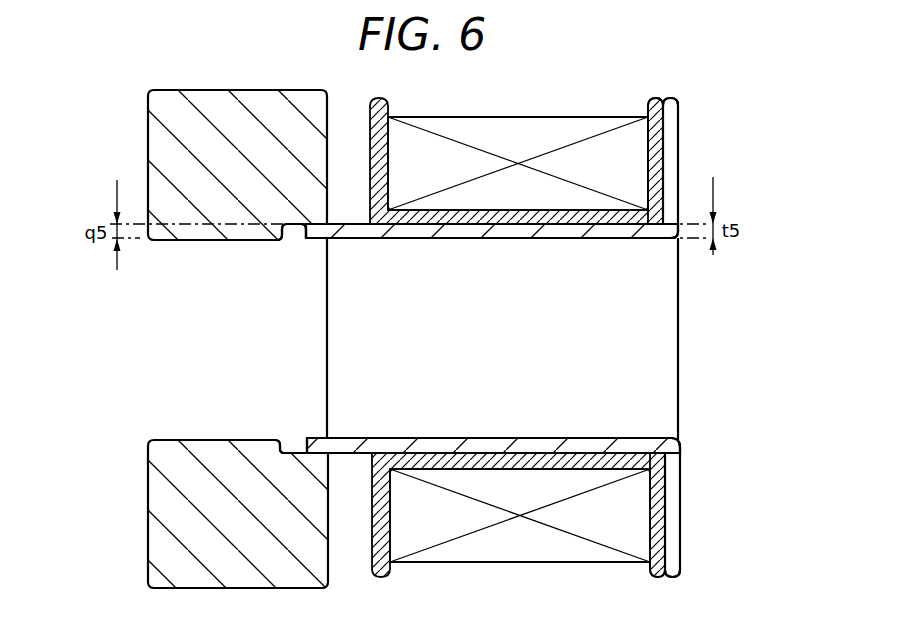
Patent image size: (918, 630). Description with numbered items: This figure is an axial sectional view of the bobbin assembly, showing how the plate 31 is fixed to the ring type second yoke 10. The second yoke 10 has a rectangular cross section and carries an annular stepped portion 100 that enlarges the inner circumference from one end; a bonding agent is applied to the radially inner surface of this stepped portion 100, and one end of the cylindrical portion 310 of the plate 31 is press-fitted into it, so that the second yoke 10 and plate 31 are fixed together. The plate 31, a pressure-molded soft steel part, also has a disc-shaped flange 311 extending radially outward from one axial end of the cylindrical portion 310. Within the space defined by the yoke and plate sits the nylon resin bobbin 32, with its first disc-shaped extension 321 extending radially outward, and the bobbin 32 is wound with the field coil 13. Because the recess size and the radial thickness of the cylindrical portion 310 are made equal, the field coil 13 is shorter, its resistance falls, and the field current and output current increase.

The second yoke 10 is at (170, 127).
The stepped portion 100 is at (287, 223).
The field coil 13 is at (528, 125).
The plate 31 is at (672, 202).
The cylindrical portion 310 is at (558, 238).
The disc-shaped flange 311 is at (670, 170).
The bobbin 32 is at (666, 125).
The first disc-shaped extension 321 is at (667, 103).